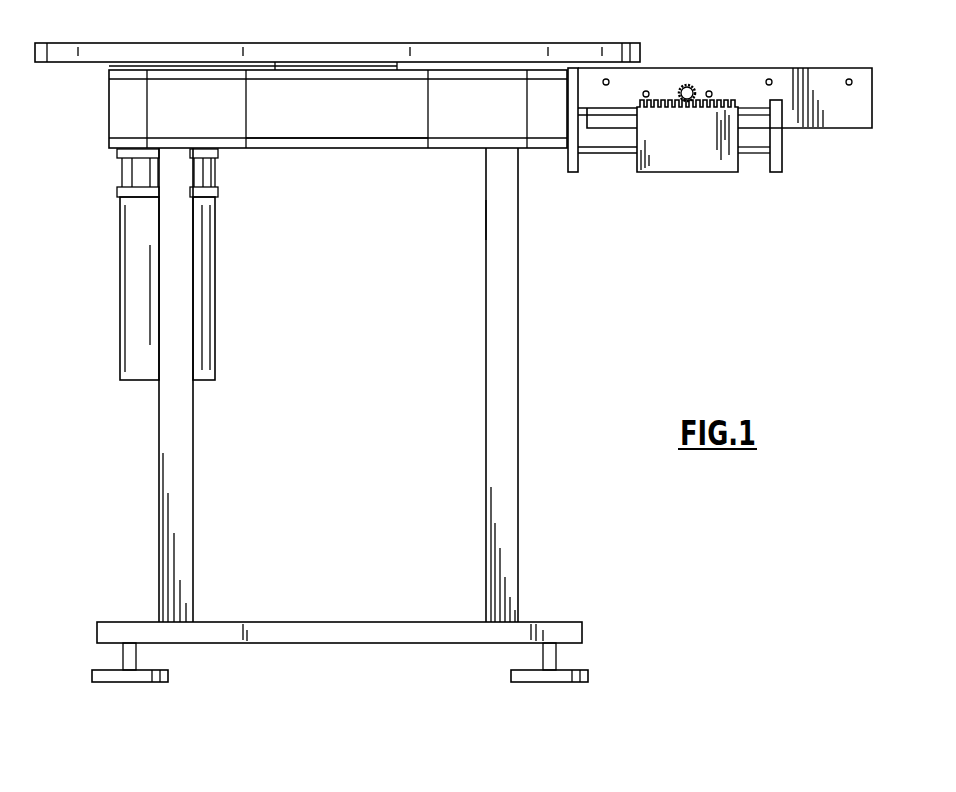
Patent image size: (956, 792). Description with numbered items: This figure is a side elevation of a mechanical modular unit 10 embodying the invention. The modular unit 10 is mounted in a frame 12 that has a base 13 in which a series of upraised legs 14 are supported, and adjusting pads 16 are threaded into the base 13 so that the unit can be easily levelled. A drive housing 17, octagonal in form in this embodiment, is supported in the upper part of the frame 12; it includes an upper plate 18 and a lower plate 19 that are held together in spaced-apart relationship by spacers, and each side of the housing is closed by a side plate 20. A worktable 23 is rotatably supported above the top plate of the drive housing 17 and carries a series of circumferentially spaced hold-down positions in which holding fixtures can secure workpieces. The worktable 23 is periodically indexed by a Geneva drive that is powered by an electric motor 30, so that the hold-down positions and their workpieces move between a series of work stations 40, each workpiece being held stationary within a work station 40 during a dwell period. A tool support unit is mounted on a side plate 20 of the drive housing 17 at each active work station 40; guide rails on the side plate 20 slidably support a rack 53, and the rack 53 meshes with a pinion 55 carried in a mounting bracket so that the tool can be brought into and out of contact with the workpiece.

The mechanical modular unit 10 is at (580, 273).
The frame 12 is at (536, 218).
The base 13 is at (567, 622).
The upraised legs 14 is at (518, 382).
The adjusting pads 16 is at (168, 675).
The drive housing 17 is at (100, 106).
The upper plate 18 is at (338, 68).
The lower plate 19 is at (340, 150).
The side plate 20 is at (210, 88).
The worktable 23 is at (567, 43).
The electric motor 30 is at (215, 350).
The work stations 40 is at (735, 188).
The rack 53 is at (693, 163).
The pinion 55 is at (688, 84).